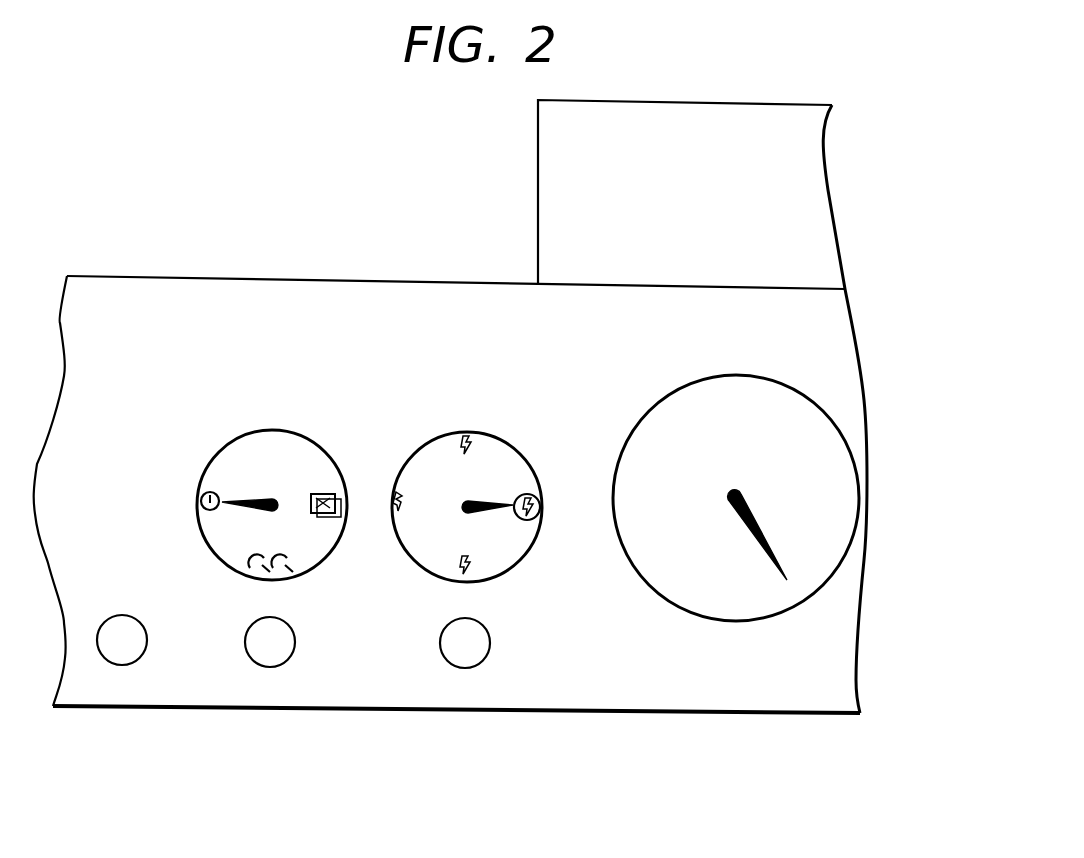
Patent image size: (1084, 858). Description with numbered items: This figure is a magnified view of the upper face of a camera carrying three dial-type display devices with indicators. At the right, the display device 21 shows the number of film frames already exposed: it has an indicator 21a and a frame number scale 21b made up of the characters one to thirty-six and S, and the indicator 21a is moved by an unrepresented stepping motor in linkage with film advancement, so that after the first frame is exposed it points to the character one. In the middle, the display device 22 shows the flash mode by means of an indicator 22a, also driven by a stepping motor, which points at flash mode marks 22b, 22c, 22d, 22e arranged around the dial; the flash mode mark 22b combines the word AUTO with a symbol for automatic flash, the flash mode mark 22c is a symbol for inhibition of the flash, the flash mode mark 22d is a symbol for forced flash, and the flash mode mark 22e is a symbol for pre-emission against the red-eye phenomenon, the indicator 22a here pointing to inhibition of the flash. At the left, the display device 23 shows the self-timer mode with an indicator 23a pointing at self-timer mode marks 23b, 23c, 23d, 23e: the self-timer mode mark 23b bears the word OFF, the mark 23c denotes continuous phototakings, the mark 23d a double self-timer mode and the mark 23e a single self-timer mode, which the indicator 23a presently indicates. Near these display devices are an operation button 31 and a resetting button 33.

The display device 21 is at (785, 620).
The indicator 21a is at (757, 545).
The frame number scale 21b is at (717, 620).
The display device 22 is at (510, 546).
The indicator 22a is at (515, 513).
The flash mode mark 22b is at (463, 438).
The flash mode mark 22c is at (527, 493).
The flash mode mark 22d is at (462, 558).
The flash mode mark 22e is at (395, 495).
The display device 23 is at (314, 548).
The indicator 23a is at (265, 512).
The self-timer mode mark 23b is at (262, 435).
The self-timer mode mark 23c is at (325, 494).
The self-timer mode mark 23d is at (285, 572).
The self-timer mode mark 23e is at (205, 492).
The operation button 31 is at (474, 656).
The resetting button 33 is at (128, 655).